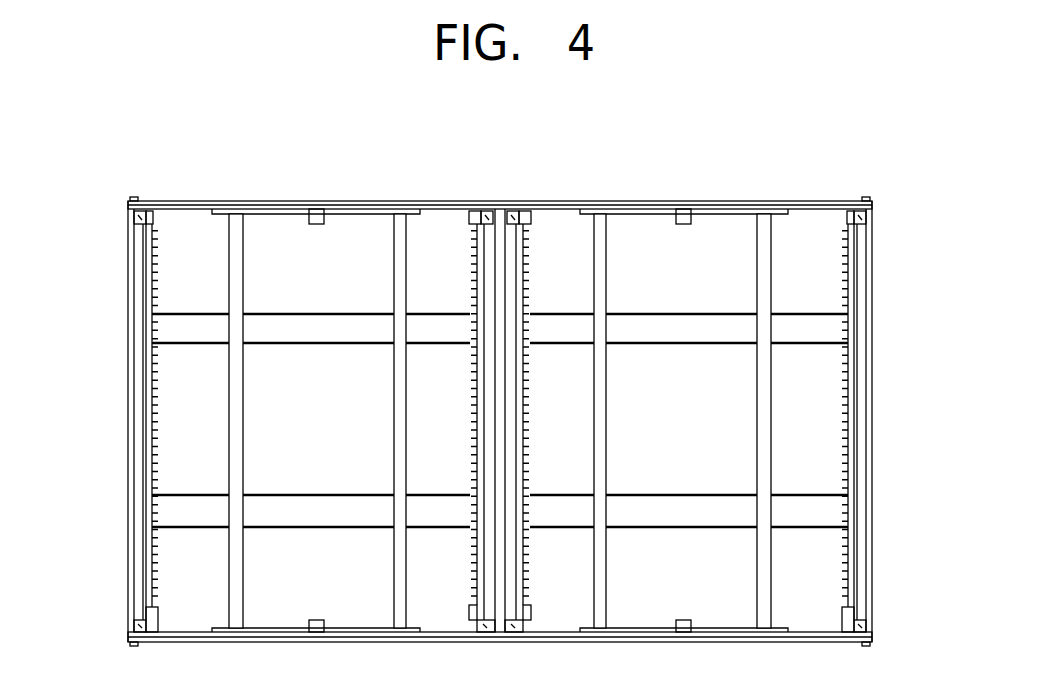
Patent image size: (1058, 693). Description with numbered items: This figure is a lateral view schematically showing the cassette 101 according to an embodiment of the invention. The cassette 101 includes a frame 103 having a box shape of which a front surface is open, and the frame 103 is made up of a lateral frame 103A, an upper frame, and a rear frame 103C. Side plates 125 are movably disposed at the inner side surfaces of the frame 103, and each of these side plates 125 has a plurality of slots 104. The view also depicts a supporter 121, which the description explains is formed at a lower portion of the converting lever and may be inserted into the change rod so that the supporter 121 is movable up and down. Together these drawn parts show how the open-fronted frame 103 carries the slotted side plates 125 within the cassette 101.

The cassette 101 is at (116, 203).
The supporter 121 is at (399, 244).
The rear frame 103C is at (648, 330).
The frame 103 is at (845, 211).
The side plate 125 is at (868, 302).
The slot 104 is at (850, 363).
The lateral frame 103A is at (873, 435).